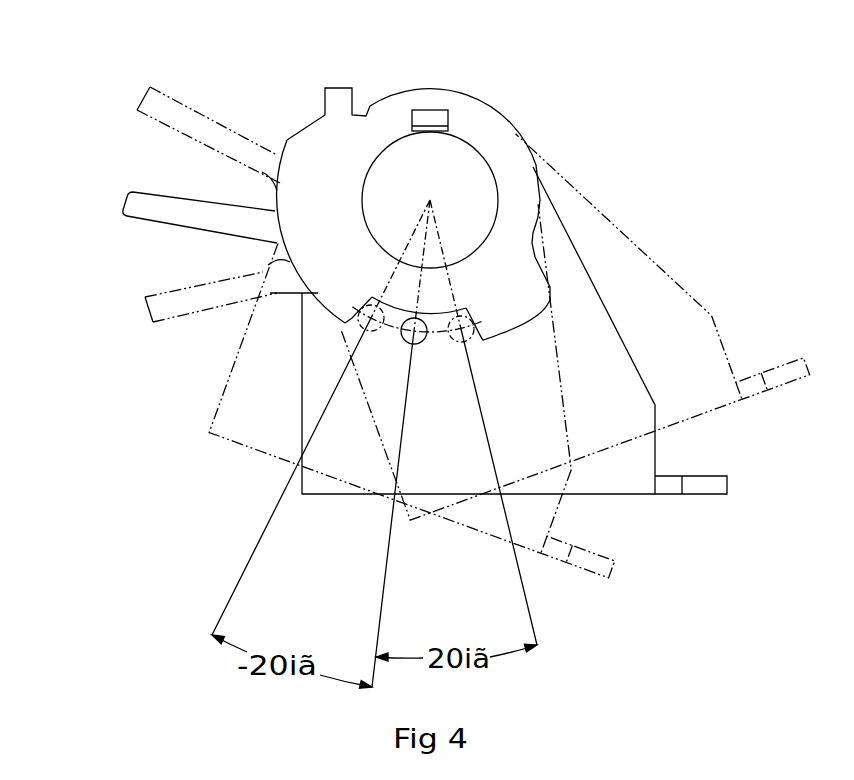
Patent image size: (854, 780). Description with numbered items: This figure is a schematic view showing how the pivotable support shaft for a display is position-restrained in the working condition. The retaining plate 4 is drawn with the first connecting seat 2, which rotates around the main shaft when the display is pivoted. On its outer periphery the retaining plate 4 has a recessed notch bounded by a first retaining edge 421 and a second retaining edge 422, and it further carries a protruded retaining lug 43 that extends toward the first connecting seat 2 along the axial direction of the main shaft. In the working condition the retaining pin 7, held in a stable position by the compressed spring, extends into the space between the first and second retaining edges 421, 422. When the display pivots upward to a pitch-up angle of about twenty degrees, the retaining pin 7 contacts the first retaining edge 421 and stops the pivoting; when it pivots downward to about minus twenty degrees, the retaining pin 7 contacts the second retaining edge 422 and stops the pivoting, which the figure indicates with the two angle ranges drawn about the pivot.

The first connecting seat 2 is at (623, 485).
The retaining plate 4 is at (480, 120).
The retaining pin 7 is at (405, 340).
The retaining lug 43 is at (330, 107).
The first retaining edge 421 is at (480, 335).
The second retaining edge 422 is at (347, 325).